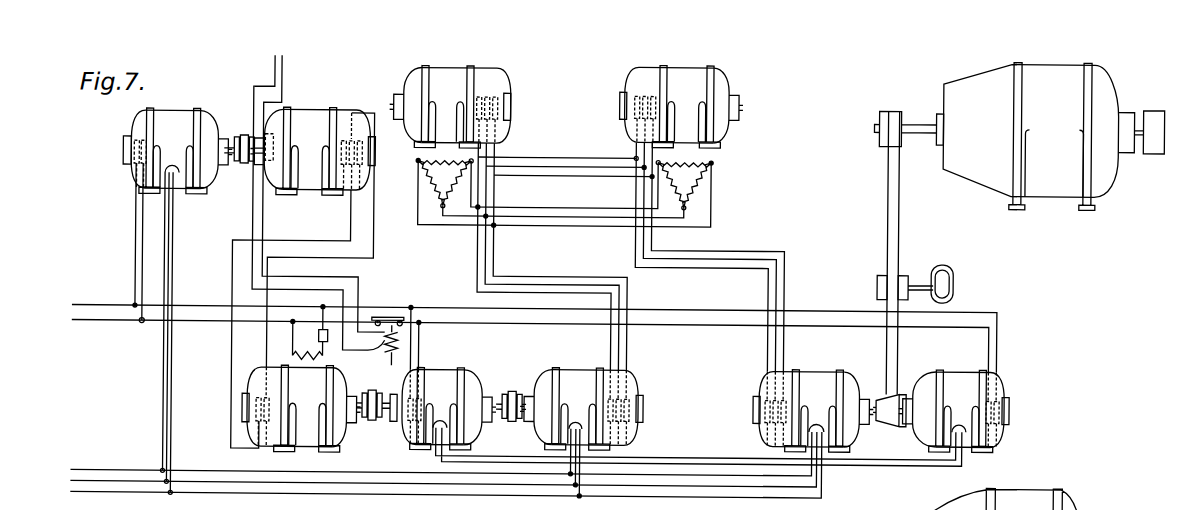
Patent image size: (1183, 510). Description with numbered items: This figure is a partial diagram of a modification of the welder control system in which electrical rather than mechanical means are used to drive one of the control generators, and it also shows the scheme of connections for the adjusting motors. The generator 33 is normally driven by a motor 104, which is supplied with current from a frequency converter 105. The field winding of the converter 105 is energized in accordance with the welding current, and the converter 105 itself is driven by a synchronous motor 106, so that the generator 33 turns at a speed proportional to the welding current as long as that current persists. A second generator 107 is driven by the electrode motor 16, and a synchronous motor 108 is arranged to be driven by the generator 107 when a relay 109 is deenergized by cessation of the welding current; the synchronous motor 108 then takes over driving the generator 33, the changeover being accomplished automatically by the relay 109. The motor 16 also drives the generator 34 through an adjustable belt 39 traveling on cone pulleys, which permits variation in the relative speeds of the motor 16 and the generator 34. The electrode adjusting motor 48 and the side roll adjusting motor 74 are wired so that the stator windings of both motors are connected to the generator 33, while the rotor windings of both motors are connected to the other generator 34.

The motor 16 is at (981, 168).
The generator 33 is at (582, 371).
The generator 34 is at (823, 369).
The adjustable belt 39 is at (893, 233).
The motor 48 is at (490, 82).
The motor 74 is at (712, 82).
The motor 104 is at (313, 441).
The frequency converter 105 is at (313, 112).
The synchronous motor 106 is at (132, 124).
The generator 107 is at (965, 365).
The synchronous motor 108 is at (450, 370).
The relay 109 is at (367, 343).